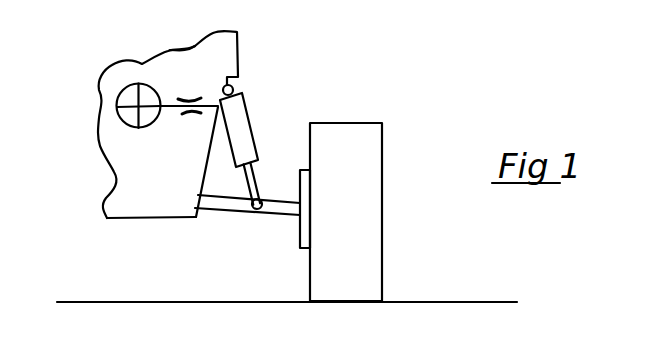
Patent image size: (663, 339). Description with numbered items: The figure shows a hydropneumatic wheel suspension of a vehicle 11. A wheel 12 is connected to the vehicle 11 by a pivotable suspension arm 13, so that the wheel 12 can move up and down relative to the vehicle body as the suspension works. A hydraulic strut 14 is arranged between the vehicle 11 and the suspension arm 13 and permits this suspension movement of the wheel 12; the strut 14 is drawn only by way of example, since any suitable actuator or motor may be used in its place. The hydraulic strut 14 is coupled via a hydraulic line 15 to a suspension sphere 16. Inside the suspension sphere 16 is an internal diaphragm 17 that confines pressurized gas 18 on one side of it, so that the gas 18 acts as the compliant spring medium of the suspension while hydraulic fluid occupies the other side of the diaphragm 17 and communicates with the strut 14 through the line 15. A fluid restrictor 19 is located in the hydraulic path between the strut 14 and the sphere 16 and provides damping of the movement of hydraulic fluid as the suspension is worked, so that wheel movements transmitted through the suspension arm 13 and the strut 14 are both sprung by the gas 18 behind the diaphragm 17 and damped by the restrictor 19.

The vehicle 11 is at (202, 50).
The wheel 12 is at (362, 142).
The suspension arm 13 is at (227, 203).
The hydraulic strut 14 is at (242, 132).
The hydraulic line 15 is at (170, 107).
The suspension sphere 16 is at (114, 66).
The internal diaphragm 17 is at (146, 88).
The pressurized gas 18 is at (117, 107).
The fluid restrictor 19 is at (200, 85).